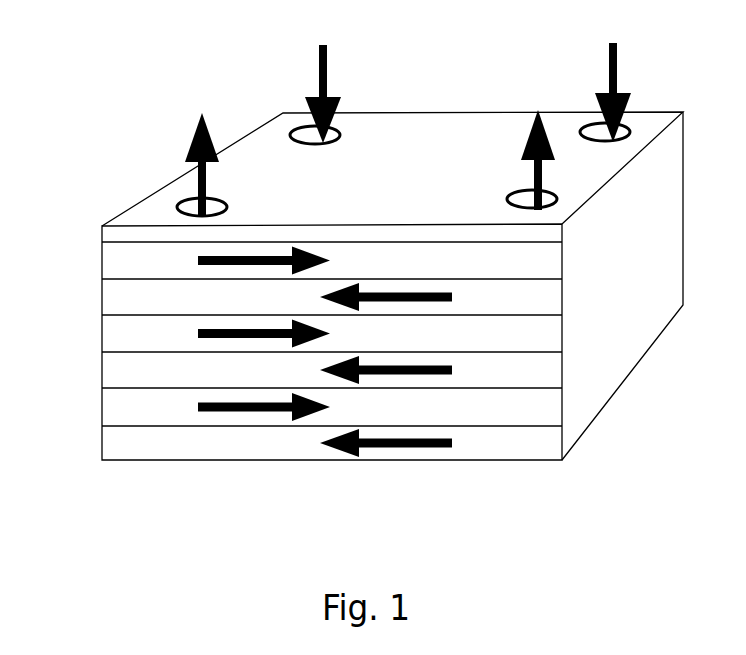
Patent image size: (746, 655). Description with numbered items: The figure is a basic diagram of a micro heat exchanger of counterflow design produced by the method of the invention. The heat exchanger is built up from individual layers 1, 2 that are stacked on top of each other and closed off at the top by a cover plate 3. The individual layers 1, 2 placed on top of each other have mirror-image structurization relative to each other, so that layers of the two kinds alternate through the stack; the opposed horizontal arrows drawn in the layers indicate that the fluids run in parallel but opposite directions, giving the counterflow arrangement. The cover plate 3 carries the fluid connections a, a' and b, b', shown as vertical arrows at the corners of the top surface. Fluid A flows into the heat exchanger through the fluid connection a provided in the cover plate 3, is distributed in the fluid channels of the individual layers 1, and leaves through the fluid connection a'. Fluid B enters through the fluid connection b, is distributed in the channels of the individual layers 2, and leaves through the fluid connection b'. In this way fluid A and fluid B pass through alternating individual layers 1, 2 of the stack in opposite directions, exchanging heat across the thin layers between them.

The individual layer 1 is at (532, 258).
The individual layer 2 is at (532, 297).
The cover plate 3 is at (110, 237).
The fluid connection a is at (315, 75).
The fluid connection a' is at (202, 148).
The fluid connection b is at (605, 72).
The fluid connection b' is at (532, 144).
The fluid A is at (330, 53).
The fluid B is at (625, 60).